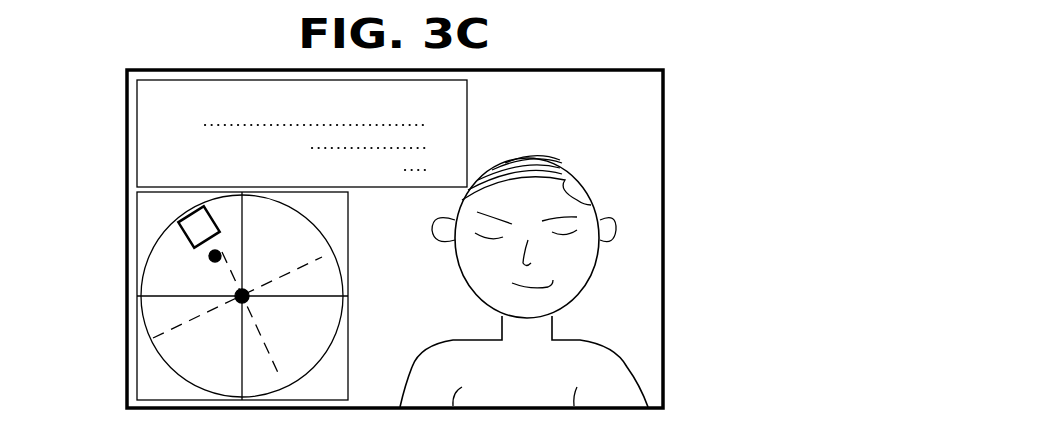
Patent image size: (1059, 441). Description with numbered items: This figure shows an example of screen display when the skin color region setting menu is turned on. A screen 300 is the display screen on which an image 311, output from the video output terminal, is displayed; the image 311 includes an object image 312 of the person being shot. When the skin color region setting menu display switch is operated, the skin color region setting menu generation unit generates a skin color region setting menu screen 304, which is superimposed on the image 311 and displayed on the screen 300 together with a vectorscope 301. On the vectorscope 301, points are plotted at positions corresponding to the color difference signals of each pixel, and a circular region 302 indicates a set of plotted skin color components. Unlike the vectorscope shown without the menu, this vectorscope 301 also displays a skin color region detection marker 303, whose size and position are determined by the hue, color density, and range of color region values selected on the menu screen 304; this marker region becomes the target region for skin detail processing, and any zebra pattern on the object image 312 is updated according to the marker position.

The screen 300 is at (665, 237).
The vectorscope 301 is at (350, 223).
The circular region 302 is at (208, 258).
The skin color region detection marker 303 is at (183, 225).
The skin color region setting menu screen 304 is at (138, 132).
The image 311 is at (530, 100).
The object image 312 is at (532, 370).